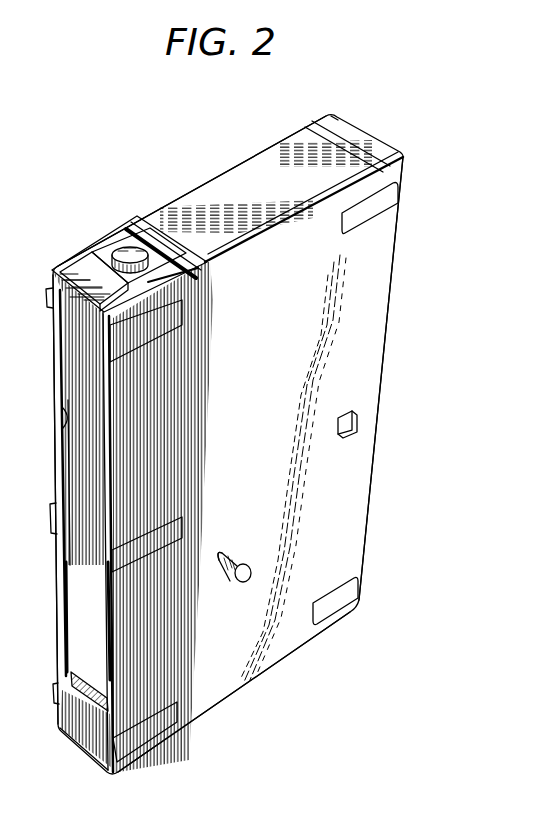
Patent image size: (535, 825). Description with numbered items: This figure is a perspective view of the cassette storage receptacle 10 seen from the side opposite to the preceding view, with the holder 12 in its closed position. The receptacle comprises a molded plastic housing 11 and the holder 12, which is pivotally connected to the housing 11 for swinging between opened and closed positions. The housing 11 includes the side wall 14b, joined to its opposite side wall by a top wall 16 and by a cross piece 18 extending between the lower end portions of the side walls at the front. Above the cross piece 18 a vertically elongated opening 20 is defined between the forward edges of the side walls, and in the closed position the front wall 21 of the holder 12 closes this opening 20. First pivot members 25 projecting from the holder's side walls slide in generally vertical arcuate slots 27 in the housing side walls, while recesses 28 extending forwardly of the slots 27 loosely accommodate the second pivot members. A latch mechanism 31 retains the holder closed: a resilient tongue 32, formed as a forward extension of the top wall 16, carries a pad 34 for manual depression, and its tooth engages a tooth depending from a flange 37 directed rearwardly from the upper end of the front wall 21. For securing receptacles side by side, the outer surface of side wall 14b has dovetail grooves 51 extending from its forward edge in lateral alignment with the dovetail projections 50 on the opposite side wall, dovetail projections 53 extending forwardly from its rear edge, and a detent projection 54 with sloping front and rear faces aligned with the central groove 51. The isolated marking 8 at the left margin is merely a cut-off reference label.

The housing element 8 is at (7, 240).
The cassette storage receptacle 10 is at (395, 333).
The housing 11 is at (383, 397).
The holder 12 is at (88, 458).
The side wall 14b is at (340, 506).
The top wall 16 is at (252, 172).
The cross piece 18 is at (93, 750).
The vertically elongated opening 20 is at (62, 432).
The front wall 21 is at (62, 558).
The first pivot members 25 is at (242, 590).
The arcuate slots 27 is at (220, 575).
The recesses 28 is at (60, 602).
The latch mechanism 31 is at (97, 232).
The resilient tongue 32 is at (165, 240).
The pad 34 is at (124, 246).
The flange 37 is at (80, 268).
The elongated projections 50 is at (46, 305).
The grooves 51 is at (120, 340).
The elongated projections 53 is at (368, 222).
The detent projection 54 is at (358, 425).